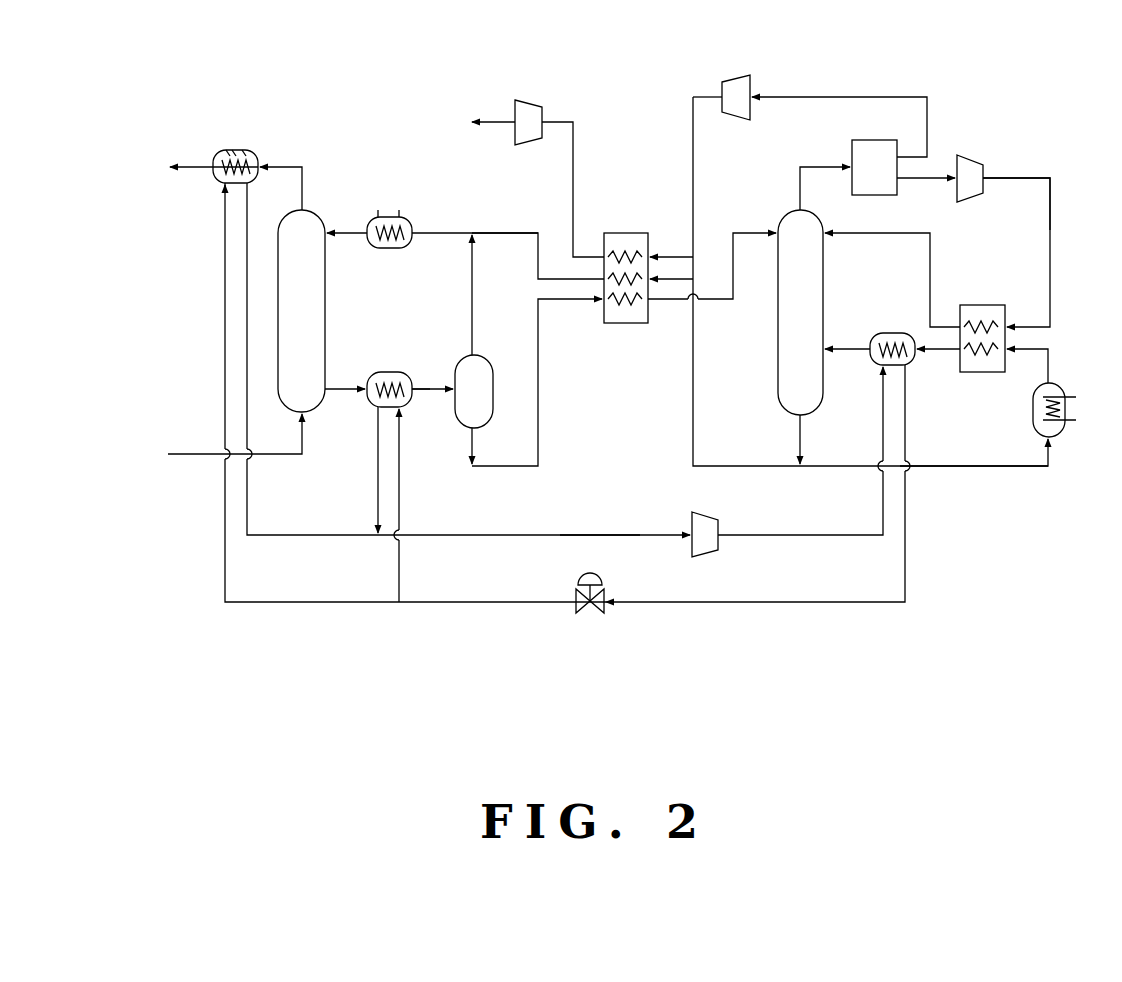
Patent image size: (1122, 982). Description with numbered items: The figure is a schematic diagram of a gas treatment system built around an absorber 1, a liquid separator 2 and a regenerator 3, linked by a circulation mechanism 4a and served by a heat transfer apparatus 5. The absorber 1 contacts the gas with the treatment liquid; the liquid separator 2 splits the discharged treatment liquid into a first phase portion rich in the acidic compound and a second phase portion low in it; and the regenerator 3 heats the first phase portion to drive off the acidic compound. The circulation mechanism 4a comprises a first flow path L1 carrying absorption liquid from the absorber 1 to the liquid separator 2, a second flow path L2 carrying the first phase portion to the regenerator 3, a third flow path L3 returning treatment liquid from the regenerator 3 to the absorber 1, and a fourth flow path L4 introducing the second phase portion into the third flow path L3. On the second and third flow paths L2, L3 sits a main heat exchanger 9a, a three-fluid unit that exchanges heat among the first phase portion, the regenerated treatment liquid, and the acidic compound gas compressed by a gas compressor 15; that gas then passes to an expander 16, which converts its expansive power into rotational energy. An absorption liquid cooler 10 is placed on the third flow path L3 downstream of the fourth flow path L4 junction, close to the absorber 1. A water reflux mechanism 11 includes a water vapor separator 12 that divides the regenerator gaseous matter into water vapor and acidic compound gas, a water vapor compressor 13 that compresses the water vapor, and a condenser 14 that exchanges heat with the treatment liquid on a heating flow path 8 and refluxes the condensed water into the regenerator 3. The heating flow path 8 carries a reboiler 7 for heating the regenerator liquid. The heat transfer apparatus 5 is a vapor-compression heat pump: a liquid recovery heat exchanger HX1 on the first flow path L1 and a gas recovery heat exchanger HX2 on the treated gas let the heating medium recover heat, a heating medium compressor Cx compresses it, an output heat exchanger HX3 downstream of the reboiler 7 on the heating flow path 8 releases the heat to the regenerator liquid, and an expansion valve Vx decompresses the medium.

The absorber 1 is at (312, 212).
The liquid separator 2 is at (484, 356).
The regenerator 3 is at (790, 212).
The circulation mechanism 4a is at (447, 222).
The heat transfer apparatus 5 is at (583, 530).
The reboiler 7 is at (1033, 406).
The heating flow path 8 is at (978, 468).
The main heat exchanger 9a is at (625, 233).
The absorption liquid cooler 10 is at (390, 249).
The water reflux mechanism 11 is at (1022, 178).
The water vapor separator 12 is at (852, 146).
The water vapor compressor 13 is at (968, 155).
The condenser 14 is at (985, 305).
The gas compressor 15 is at (736, 76).
The expander 16 is at (530, 100).
The liquid recovery heat exchanger HX1 is at (389, 372).
The gas recovery heat exchanger HX2 is at (234, 150).
The output heat exchanger HX3 is at (893, 333).
The first flow path L1 is at (431, 396).
The second flow path L2 is at (540, 373).
The third flow path L3 is at (510, 233).
The fourth flow path L4 is at (471, 293).
The heating medium compressor Cx is at (694, 520).
The expansion valve Vx is at (577, 590).